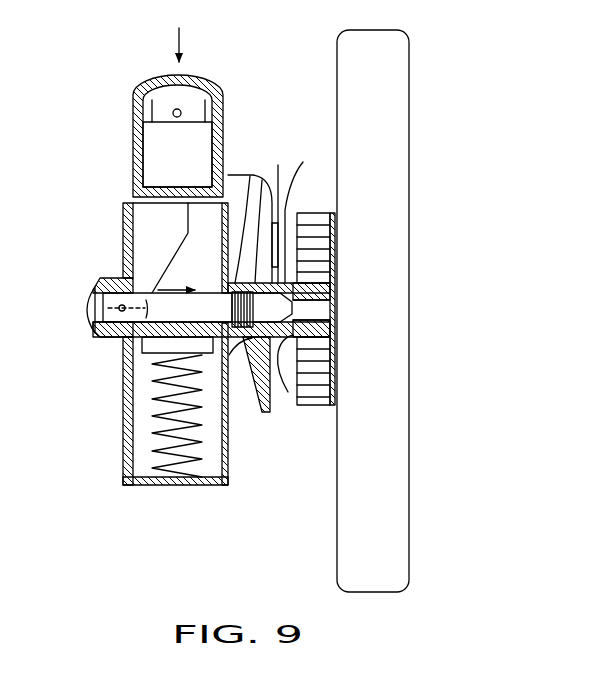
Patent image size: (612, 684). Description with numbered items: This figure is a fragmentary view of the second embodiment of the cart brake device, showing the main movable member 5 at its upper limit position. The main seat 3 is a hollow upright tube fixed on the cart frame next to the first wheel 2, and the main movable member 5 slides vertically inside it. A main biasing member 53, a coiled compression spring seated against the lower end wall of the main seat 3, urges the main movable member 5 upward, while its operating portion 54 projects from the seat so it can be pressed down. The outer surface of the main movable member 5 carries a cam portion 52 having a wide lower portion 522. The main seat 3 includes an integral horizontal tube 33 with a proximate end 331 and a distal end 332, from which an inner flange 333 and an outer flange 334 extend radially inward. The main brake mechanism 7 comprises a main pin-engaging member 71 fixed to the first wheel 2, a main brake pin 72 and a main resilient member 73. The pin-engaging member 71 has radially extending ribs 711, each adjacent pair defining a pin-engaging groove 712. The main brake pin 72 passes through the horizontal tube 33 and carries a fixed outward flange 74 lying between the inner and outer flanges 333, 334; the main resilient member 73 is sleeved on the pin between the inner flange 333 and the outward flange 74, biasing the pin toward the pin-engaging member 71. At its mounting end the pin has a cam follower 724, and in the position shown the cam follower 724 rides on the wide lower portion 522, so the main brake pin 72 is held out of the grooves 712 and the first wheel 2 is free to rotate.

The first wheel 2 is at (403, 103).
The main seat 3 is at (123, 474).
The main movable member 5 is at (166, 103).
The main brake mechanism 7 is at (362, 344).
The horizontal tube 33 is at (282, 188).
The cam portion 52 is at (170, 263).
The main biasing member 53 is at (173, 430).
The operating portion 54 is at (150, 90).
The main pin-engaging member 71 is at (394, 271).
The main brake pin 72 is at (297, 343).
The main resilient member 73 is at (245, 362).
The outward flange 74 is at (297, 398).
The proximate end 331 is at (250, 178).
The distal end 332 is at (300, 172).
The inner flange 333 is at (230, 293).
The outer flange 334 is at (281, 295).
The wide lower portion 522 is at (88, 311).
The ribs 711 is at (327, 229).
The pin-engaging groove 712 is at (328, 310).
The cam follower 724 is at (116, 280).